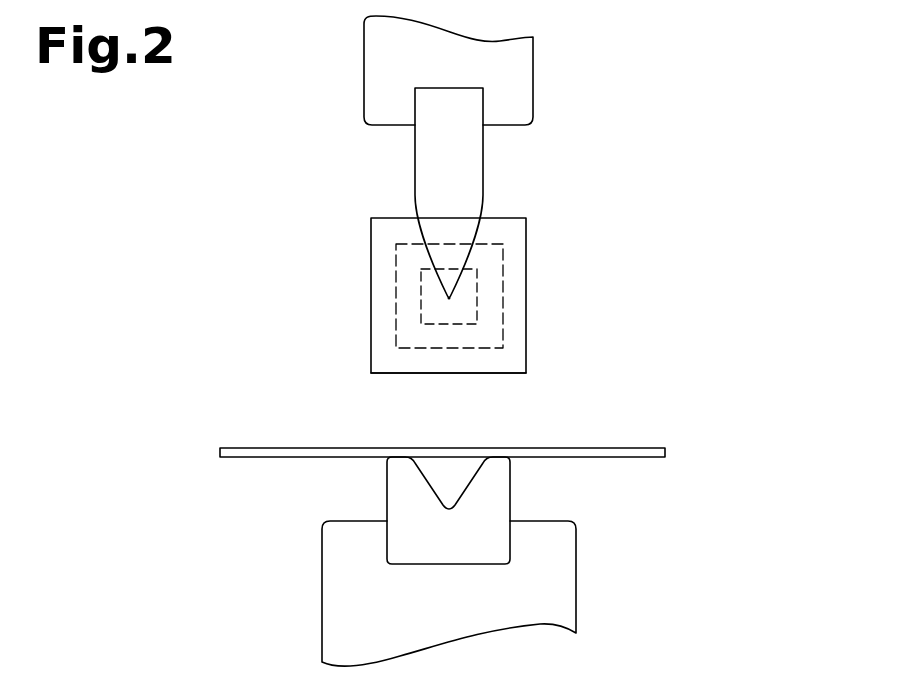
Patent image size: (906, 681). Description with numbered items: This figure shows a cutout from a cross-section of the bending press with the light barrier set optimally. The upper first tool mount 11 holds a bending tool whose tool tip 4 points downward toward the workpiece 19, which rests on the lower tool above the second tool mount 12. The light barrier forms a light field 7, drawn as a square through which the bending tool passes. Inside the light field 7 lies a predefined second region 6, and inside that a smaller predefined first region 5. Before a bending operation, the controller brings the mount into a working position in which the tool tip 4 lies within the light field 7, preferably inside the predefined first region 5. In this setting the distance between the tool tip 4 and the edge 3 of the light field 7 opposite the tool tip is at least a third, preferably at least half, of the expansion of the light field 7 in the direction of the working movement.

The edge of the light field 3 is at (449, 383).
The tool tip 4 is at (452, 299).
The predefined first region 5 is at (421, 285).
The predefined second region 6 is at (396, 326).
The light field 7 is at (527, 233).
The first tool mount 11 is at (533, 77).
The second tool mount 12 is at (576, 566).
The workpiece 19 is at (665, 452).